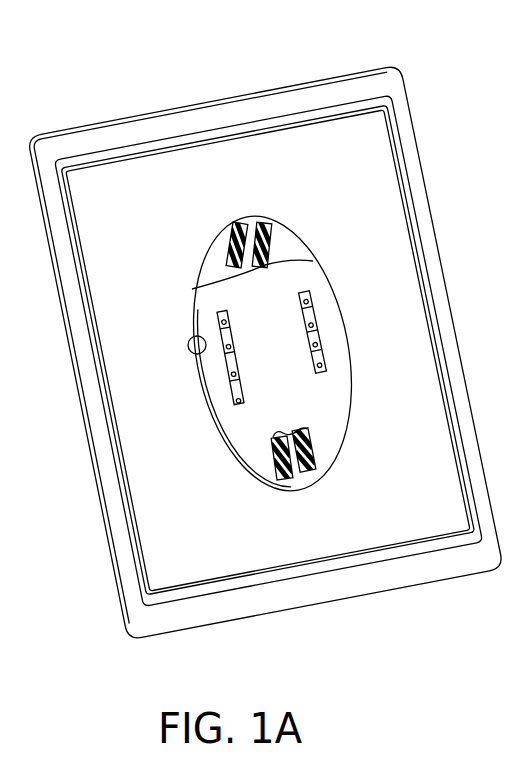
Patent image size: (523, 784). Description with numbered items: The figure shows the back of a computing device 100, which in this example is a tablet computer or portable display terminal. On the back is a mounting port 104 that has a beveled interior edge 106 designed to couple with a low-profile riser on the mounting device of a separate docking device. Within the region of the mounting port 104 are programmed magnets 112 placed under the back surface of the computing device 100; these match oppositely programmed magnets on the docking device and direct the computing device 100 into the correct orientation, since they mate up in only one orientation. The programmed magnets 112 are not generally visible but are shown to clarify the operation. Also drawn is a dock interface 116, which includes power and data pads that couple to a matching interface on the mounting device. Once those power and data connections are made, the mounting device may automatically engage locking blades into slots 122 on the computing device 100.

The computing device 100 is at (328, 78).
The mounting port 104 is at (310, 262).
The beveled interior edge 106 is at (188, 343).
The programmed magnets 112 is at (236, 222).
The dock interface 116 is at (219, 312).
The slots 122 is at (192, 289).